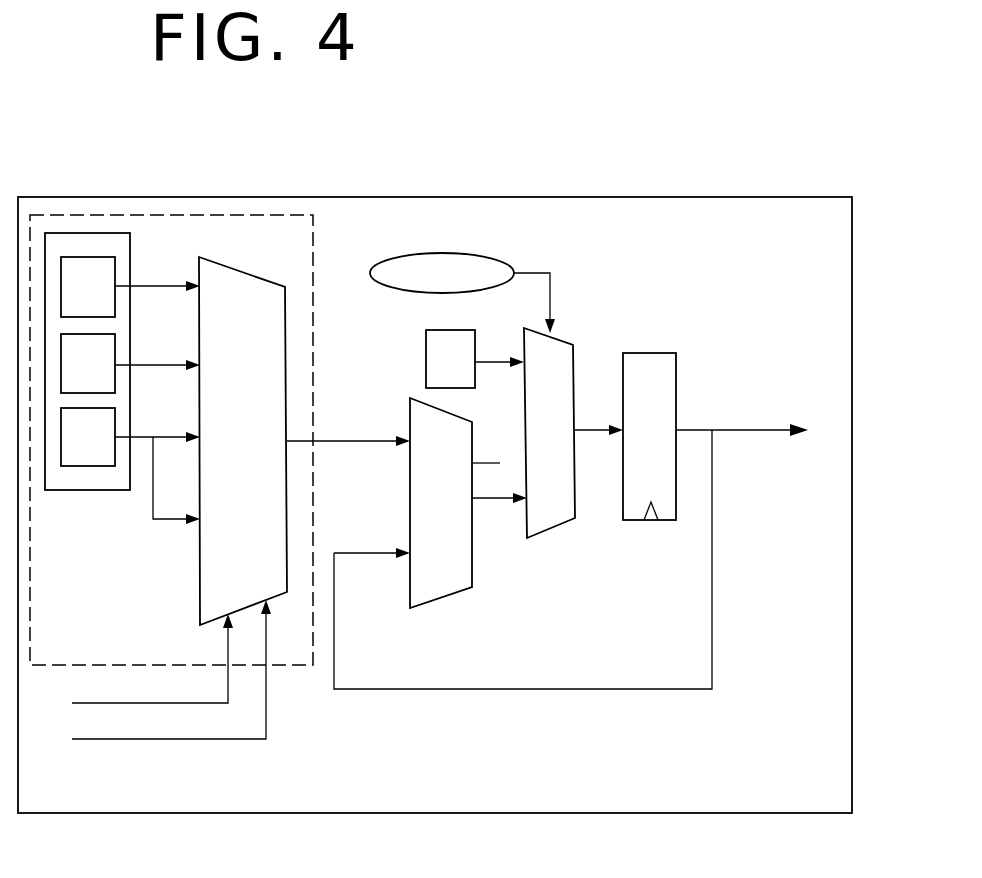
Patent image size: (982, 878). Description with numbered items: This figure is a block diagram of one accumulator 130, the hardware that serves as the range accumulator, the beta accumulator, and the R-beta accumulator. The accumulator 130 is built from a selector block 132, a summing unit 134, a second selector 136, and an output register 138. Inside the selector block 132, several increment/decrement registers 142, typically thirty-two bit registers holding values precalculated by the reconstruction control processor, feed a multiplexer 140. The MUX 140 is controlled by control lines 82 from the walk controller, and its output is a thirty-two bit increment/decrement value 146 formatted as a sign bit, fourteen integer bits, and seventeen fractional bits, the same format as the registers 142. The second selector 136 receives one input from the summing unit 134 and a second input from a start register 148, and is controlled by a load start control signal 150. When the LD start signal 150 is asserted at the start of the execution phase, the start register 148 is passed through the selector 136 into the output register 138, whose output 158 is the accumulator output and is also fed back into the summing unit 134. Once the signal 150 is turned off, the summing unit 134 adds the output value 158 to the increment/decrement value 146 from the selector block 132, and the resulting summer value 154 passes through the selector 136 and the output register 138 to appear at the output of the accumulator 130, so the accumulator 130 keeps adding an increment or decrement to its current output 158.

The accumulator 130 is at (750, 192).
The selector block 132 is at (350, 232).
The summing unit 134 is at (453, 590).
The second selector 136 is at (574, 334).
The output register 138 is at (674, 342).
The multiplexer (MUX) 140 is at (260, 561).
The increment/decrement registers 142 is at (140, 258).
The increment/decrement value 146 is at (310, 433).
The start register 148 is at (451, 320).
The load start control signal 150 is at (472, 242).
The summer value 154 is at (497, 511).
The output 158 is at (740, 420).
The control lines 82 is at (168, 703).